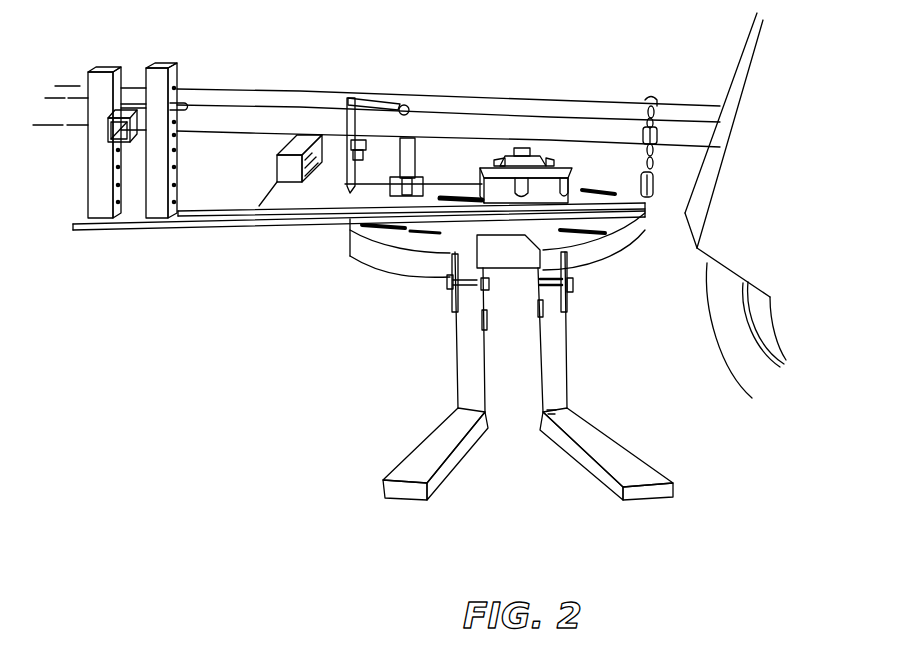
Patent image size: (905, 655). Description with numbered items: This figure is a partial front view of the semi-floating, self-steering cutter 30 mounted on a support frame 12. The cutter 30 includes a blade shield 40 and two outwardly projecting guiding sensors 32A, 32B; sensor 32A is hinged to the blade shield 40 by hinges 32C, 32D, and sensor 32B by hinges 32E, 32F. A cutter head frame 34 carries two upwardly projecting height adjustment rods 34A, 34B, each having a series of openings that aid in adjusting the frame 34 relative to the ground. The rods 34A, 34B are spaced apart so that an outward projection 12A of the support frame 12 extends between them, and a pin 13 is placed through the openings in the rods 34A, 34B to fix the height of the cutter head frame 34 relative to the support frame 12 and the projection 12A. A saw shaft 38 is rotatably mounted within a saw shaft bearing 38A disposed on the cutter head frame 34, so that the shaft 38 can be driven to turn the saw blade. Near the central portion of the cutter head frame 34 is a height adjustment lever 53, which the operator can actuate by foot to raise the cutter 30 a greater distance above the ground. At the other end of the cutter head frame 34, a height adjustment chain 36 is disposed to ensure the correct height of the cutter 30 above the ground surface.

The support frame 12 is at (249, 119).
The outward projection 12A is at (128, 110).
The pin 13 is at (183, 100).
The self-steering cutter 30 is at (292, 355).
The guiding sensor 32A is at (587, 438).
The guiding sensor 32B is at (443, 440).
The hinge 32C is at (533, 308).
The hinge 32D is at (570, 305).
The hinge 32E is at (452, 298).
The hinge 32F is at (488, 289).
The cutter head frame 34 is at (210, 224).
The height adjustment rod 34A is at (158, 167).
The height adjustment rod 34B is at (100, 163).
The height adjustment chain 36 is at (657, 152).
The saw shaft 38 is at (560, 168).
The saw shaft bearing 38A is at (537, 163).
The blade shield 40 is at (625, 250).
The height adjustment lever 53 is at (382, 96).